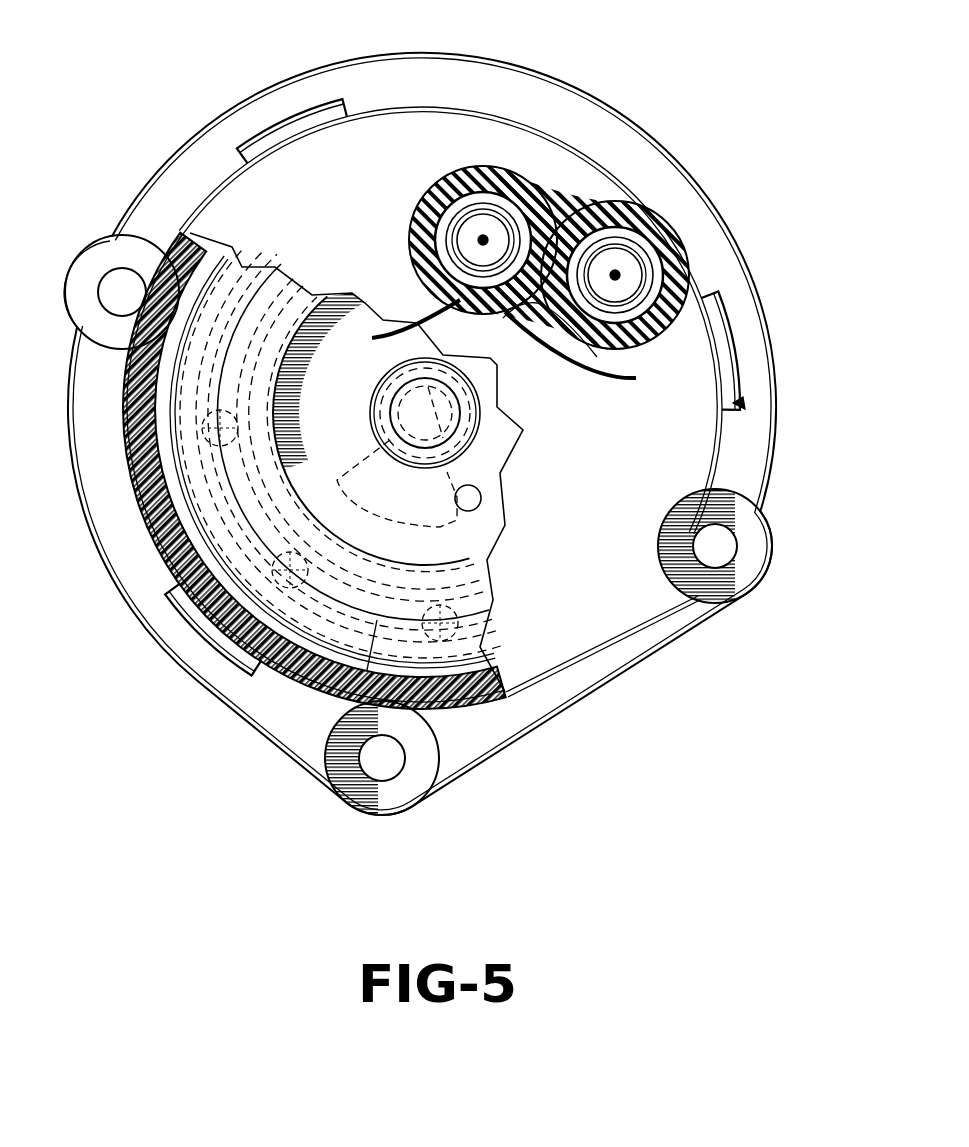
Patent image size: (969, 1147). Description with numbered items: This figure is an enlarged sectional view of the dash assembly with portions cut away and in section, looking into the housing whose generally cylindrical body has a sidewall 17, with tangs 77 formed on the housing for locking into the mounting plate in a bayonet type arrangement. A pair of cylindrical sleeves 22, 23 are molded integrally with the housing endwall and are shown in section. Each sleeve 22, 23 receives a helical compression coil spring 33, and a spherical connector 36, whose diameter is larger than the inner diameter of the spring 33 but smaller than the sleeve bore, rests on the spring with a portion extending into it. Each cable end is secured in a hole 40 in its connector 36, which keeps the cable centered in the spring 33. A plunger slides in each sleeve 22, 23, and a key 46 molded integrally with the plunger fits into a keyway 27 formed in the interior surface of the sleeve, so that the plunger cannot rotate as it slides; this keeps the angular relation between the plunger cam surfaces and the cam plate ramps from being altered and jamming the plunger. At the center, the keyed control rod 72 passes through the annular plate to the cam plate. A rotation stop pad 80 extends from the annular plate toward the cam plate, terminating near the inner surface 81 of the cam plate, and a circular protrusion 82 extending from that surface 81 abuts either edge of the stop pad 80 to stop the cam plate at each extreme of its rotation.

The sidewall 17 is at (147, 510).
The cylindrical sleeve 22 is at (678, 220).
The cylindrical sleeve 23 is at (470, 163).
The keyway 27 is at (590, 345).
The helical compression coil spring 33 is at (440, 238).
The spherical connector 36 is at (630, 280).
The hole 40 is at (616, 273).
The key 46 is at (466, 328).
The control rod 72 is at (742, 398).
The tangs 77 is at (224, 648).
The rotation stop pad 80 is at (445, 530).
The inner surface 81 is at (483, 462).
The circular protrusion 82 is at (481, 502).